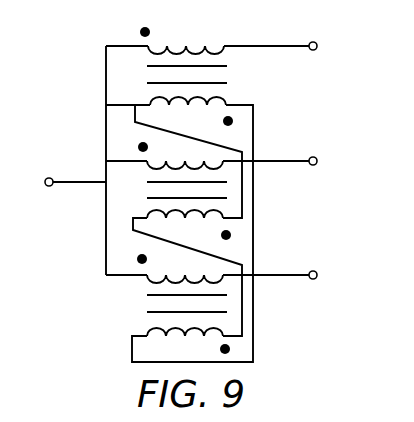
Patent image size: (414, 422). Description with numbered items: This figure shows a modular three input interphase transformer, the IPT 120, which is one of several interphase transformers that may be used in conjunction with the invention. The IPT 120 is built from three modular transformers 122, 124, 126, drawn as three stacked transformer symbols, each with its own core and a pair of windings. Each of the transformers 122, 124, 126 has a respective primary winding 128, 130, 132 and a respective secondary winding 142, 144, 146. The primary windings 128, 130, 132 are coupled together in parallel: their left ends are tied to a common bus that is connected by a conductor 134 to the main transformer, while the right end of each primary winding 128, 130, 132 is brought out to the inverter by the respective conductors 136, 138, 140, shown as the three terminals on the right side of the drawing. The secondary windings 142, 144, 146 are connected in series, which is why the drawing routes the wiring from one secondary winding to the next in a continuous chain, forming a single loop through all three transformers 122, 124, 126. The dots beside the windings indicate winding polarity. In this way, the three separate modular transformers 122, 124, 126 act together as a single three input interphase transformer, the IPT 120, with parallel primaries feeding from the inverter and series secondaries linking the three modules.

The modular three input IPT 120 is at (324, 126).
The modular transformer 122 is at (240, 80).
The modular transformer 124 is at (136, 193).
The modular transformer 126 is at (133, 308).
The primary winding 128 is at (191, 49).
The primary winding 130 is at (147, 166).
The primary winding 132 is at (147, 280).
The conductor 134 is at (73, 185).
The conductor 136 is at (287, 46).
The conductor 138 is at (283, 164).
The conductor 140 is at (275, 277).
The secondary winding 142 is at (152, 96).
The secondary winding 144 is at (228, 216).
The secondary winding 146 is at (163, 330).